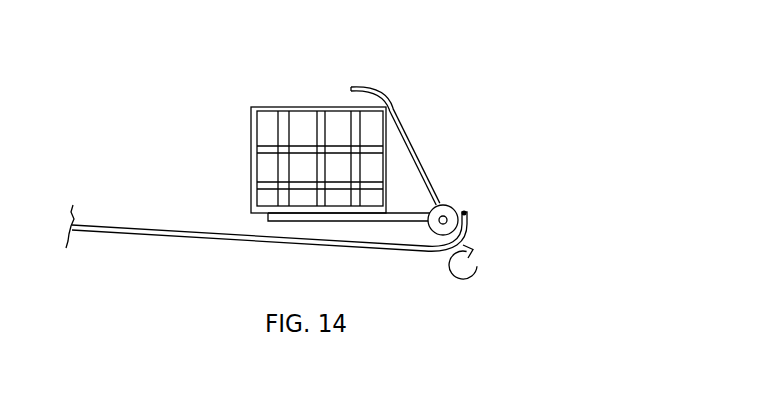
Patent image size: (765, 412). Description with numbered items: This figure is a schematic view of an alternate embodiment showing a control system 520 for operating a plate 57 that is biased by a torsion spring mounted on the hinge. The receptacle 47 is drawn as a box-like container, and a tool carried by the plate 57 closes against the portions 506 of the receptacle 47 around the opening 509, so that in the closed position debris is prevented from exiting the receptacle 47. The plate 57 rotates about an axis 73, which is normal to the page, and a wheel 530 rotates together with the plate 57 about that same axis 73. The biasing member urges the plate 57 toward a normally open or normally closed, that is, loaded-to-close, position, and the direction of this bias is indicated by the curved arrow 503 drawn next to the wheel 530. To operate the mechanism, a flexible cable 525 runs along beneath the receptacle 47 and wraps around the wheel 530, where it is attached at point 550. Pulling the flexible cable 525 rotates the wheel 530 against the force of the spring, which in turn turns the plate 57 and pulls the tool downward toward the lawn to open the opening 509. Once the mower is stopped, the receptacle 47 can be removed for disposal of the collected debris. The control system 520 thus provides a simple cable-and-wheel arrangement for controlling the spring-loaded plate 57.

The receptacle 47 is at (298, 110).
The portions of the receptacle 506 is at (382, 93).
The plate 57 is at (411, 144).
The opening 509 is at (395, 192).
The wheel 530 is at (452, 208).
The attachment point 550 is at (465, 213).
The axis 73 is at (447, 221).
The flexible cable 525 is at (120, 234).
The control system 520 is at (155, 285).
The arrow 503 is at (468, 279).